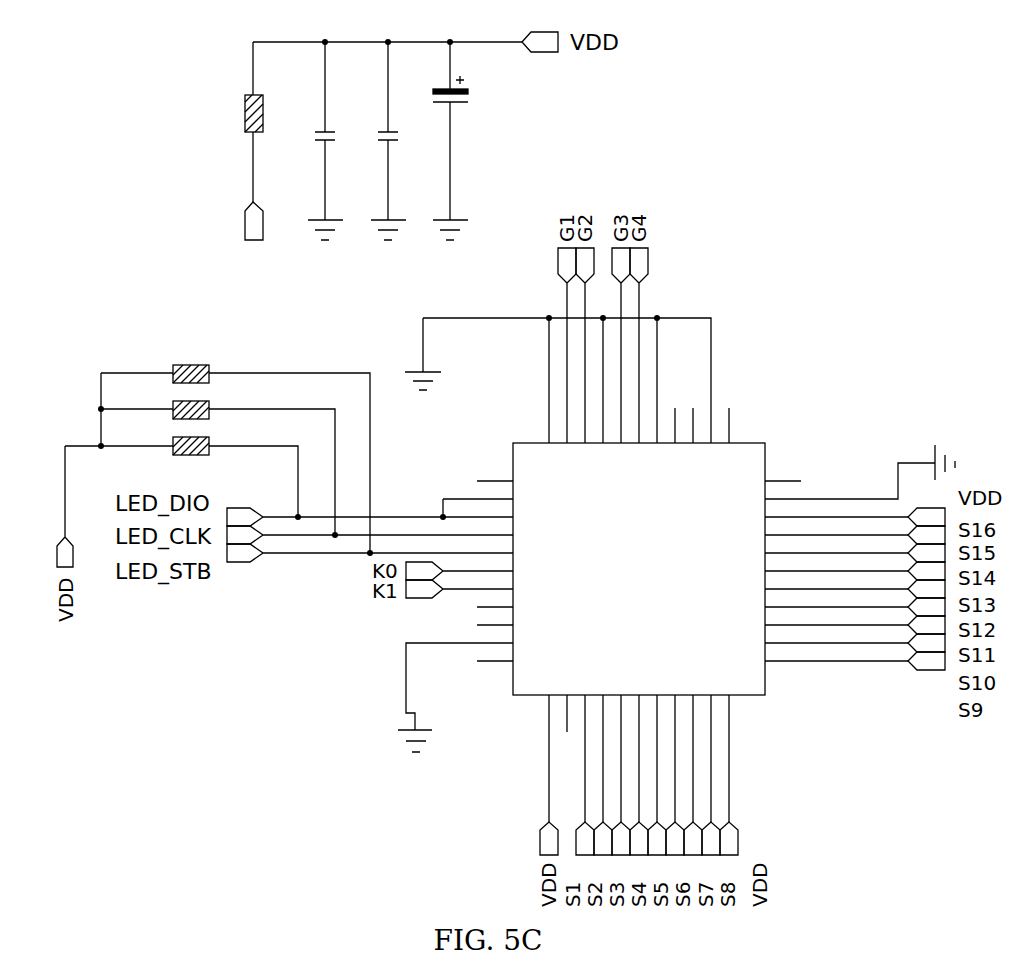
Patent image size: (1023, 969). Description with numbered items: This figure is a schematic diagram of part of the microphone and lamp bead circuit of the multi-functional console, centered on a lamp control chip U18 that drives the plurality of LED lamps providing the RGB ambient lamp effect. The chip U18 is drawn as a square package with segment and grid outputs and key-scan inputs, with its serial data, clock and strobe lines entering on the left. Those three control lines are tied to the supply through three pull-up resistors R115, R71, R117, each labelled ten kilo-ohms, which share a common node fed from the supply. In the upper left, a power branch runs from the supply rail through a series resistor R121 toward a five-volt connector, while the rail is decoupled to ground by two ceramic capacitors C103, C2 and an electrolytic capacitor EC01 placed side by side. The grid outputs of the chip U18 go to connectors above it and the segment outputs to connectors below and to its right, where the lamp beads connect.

The 33R resistor R121 is at (249, 160).
The capacitor 103 C103 is at (331, 152).
The capacitor 106 C2 is at (394, 152).
The electrolytic capacitor 470uF/10V EC01 is at (461, 152).
The 10K pull-up resistor R115 is at (237, 455).
The 10K pull-up resistor R71 is at (218, 455).
The 10K pull-up resistor R117 is at (183, 474).
The LED driver IC U18 is at (716, 620).